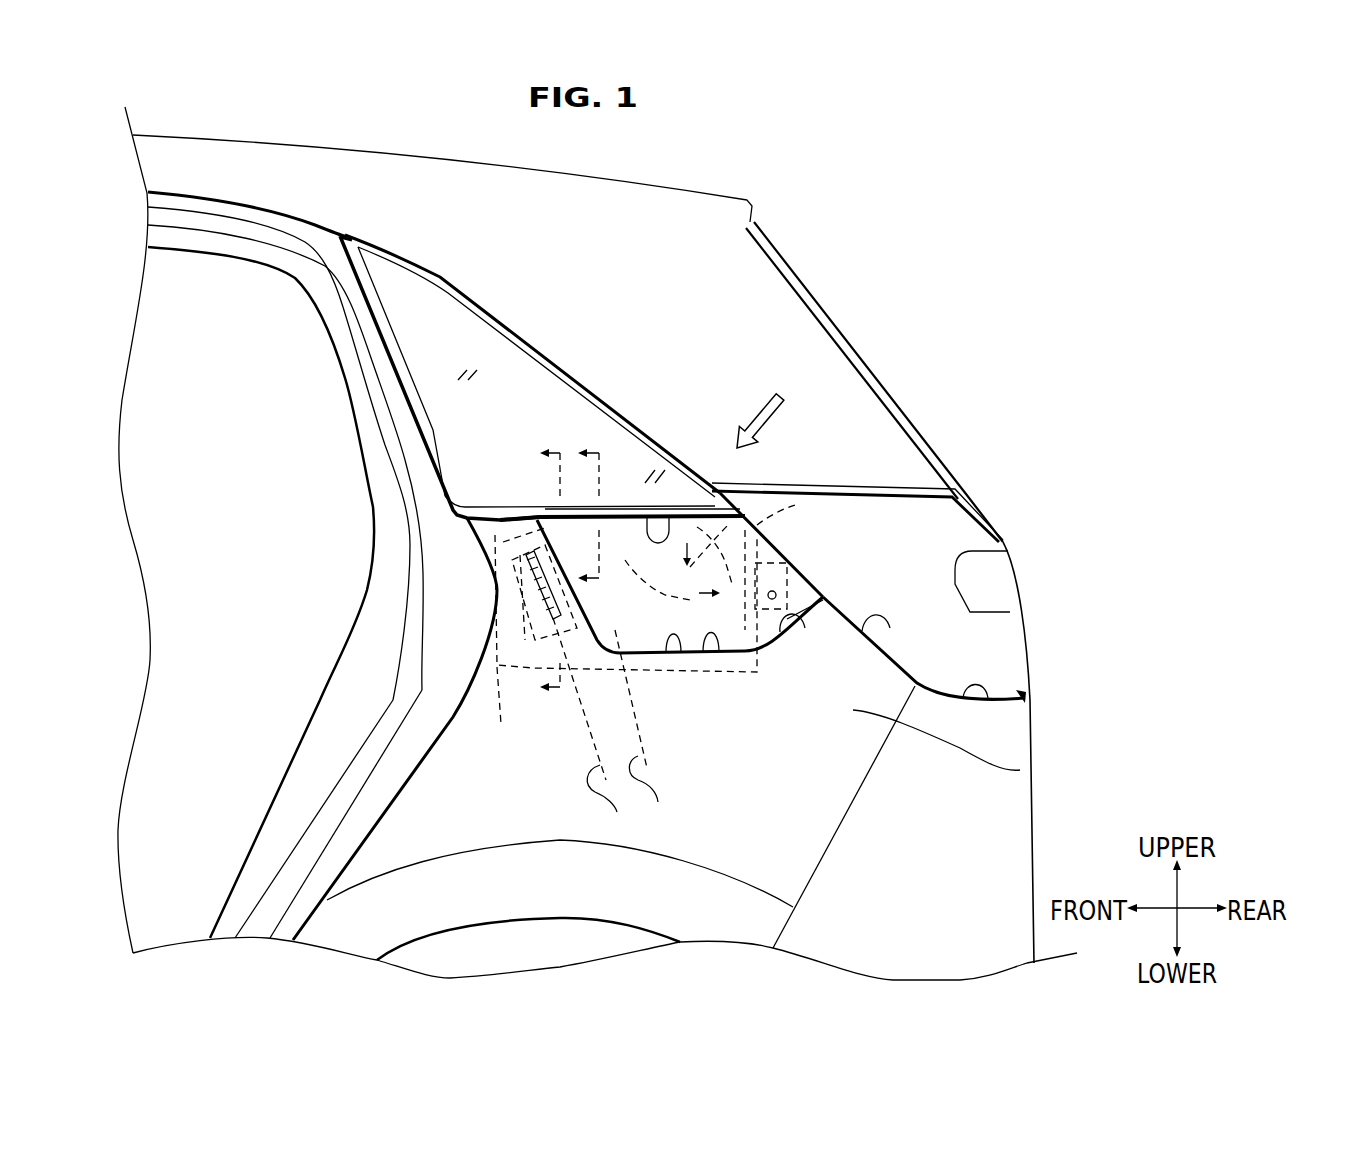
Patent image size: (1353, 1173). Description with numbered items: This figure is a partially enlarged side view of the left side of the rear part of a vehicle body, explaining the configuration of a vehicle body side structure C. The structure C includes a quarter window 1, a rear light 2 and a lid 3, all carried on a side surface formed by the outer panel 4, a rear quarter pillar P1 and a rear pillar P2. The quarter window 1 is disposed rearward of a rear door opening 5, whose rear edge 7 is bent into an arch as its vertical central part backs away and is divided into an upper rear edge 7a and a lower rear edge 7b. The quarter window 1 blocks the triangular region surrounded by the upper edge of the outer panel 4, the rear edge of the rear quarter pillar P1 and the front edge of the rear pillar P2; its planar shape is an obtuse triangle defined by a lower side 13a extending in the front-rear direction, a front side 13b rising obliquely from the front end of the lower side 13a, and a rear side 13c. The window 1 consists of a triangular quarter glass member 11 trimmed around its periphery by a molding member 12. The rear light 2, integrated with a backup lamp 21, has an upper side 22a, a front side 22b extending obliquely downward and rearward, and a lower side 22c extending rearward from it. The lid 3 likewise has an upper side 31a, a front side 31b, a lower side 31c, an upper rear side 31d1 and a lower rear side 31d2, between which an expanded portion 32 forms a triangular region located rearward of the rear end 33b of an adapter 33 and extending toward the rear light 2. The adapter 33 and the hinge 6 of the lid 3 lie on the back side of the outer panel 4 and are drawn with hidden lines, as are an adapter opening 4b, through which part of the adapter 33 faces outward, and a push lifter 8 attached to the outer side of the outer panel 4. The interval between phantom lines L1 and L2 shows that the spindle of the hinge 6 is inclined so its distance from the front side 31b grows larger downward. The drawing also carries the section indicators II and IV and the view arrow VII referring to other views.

The vehicle body side structure C is at (837, 179).
The quarter window 1 is at (498, 377).
The rear light 2 is at (910, 691).
The lid 3 is at (707, 578).
The outer panel 4 is at (1020, 770).
The adapter opening 4b is at (702, 674).
The rear door opening 5 is at (256, 268).
The hinge 6 is at (502, 711).
The rear edge 7 is at (368, 578).
The upper rear edge 7a is at (380, 358).
The lower rear edge 7b is at (420, 770).
The push lifter 8 is at (817, 570).
The quarter glass member 11 is at (478, 340).
The molding member 12 is at (498, 377).
The lower side 13a is at (490, 492).
The front side 13b is at (433, 433).
The rear side 13c is at (603, 398).
The backup lamp 21 is at (1000, 583).
The upper side 22a is at (893, 496).
The front side 22b is at (870, 638).
The lower side 22c is at (1010, 692).
The upper side 31a is at (669, 517).
The front side 31b is at (590, 602).
The lower side 31c is at (728, 682).
The upper rear side 31d1 is at (770, 550).
The lower rear side 31d2 is at (790, 634).
The expanded portion 32 is at (827, 604).
The adapter 33 is at (737, 680).
The rear end 33b is at (833, 483).
The rear quarter pillar P1 is at (323, 268).
The rear pillar P2 is at (697, 355).
The phantom line L1 is at (593, 728).
The phantom line L2 is at (644, 729).
The section line II is at (602, 516).
The section line IV is at (536, 571).
The view direction VII is at (761, 402).